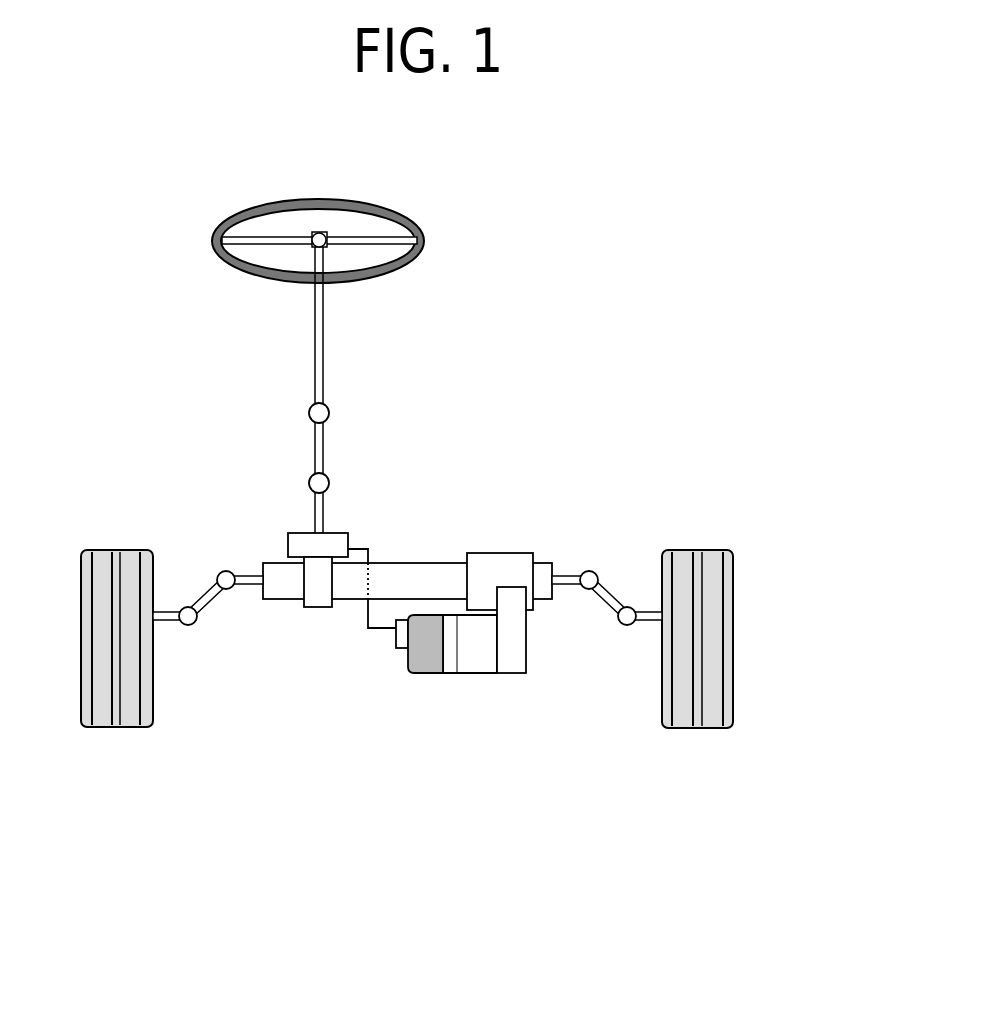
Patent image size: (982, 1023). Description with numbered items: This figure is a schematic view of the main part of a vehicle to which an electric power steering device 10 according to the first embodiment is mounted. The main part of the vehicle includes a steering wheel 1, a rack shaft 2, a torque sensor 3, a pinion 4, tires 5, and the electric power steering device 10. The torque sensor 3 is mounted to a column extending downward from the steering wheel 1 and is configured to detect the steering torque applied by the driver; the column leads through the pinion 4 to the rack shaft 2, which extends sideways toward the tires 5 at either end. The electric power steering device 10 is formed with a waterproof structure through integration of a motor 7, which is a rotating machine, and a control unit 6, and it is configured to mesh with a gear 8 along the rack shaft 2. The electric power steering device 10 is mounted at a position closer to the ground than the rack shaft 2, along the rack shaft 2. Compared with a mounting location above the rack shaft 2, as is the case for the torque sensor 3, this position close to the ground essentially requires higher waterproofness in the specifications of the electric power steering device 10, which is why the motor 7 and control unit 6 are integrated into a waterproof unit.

The steering wheel 1 is at (423, 260).
The rack shaft 2 is at (440, 562).
The torque sensor 3 is at (297, 528).
The pinion 4 is at (313, 608).
The tires 5 is at (735, 586).
The control unit 6 is at (413, 673).
The motor 7 is at (462, 673).
The gear 8 is at (525, 673).
The electric power steering device 10 is at (402, 672).